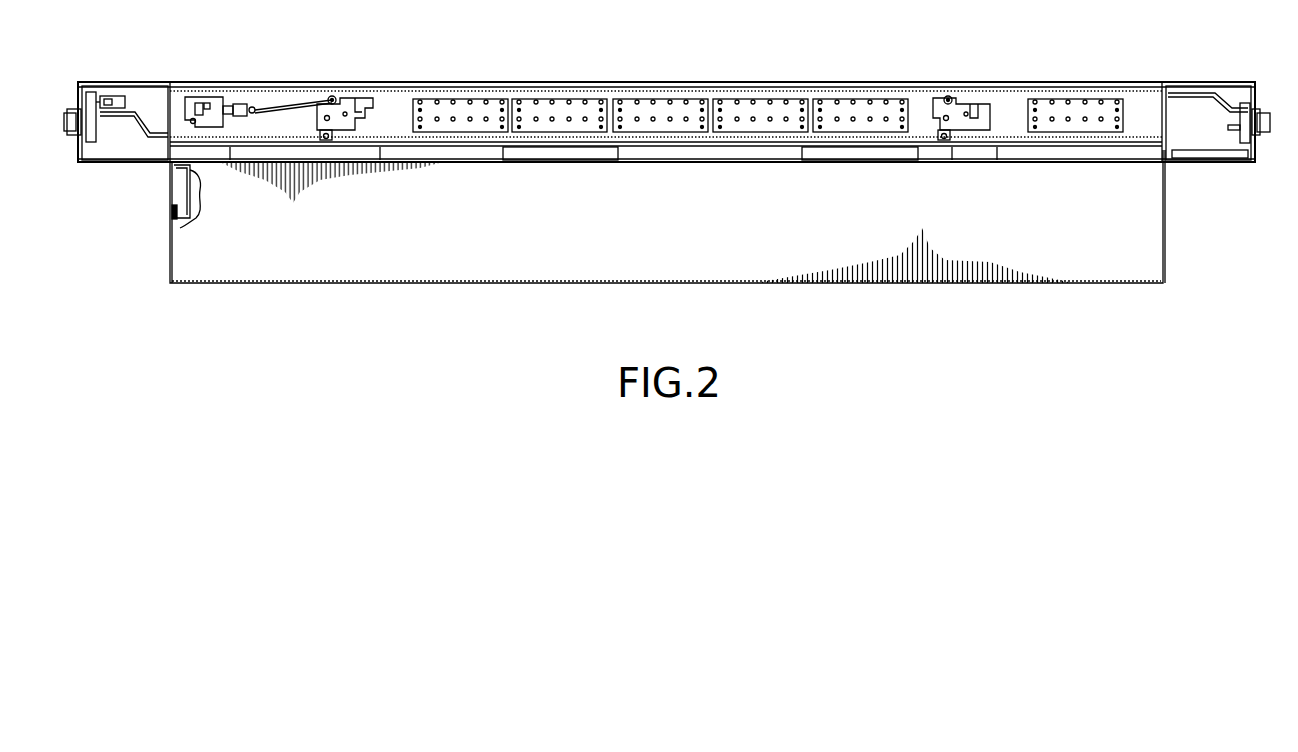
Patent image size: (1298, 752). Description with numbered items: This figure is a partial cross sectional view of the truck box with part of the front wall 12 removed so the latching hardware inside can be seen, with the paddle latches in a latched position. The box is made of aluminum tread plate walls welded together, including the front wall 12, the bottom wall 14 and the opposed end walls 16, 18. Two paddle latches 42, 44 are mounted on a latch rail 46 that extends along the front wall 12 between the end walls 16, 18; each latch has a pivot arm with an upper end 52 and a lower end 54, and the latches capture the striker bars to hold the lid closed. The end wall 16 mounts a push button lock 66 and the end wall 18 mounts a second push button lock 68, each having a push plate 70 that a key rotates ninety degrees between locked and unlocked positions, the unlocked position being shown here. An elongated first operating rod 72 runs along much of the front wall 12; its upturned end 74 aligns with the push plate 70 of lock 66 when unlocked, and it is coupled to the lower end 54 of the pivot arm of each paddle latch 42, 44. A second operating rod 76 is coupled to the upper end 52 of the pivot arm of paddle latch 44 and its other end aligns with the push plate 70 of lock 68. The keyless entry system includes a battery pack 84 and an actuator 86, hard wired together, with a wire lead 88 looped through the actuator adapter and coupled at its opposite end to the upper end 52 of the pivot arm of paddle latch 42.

The front wall 12 is at (540, 250).
The bottom wall 14 is at (825, 285).
The end wall 16 is at (171, 268).
The end wall 18 is at (1165, 230).
The paddle latch 42 is at (373, 83).
The paddle latch 44 is at (995, 83).
The latch rail 46 is at (652, 84).
The upper end 52 is at (334, 96).
The lower end 54 is at (328, 140).
The push button lock 66 is at (68, 142).
The push button lock 68 is at (1262, 100).
The push plate 70 is at (108, 120).
The first operating rod 72 is at (252, 137).
The upturned end 74 is at (136, 84).
The second operating rod 76 is at (1143, 84).
The battery pack 84 is at (170, 197).
The actuator 86 is at (204, 84).
The wire lead 88 is at (284, 100).